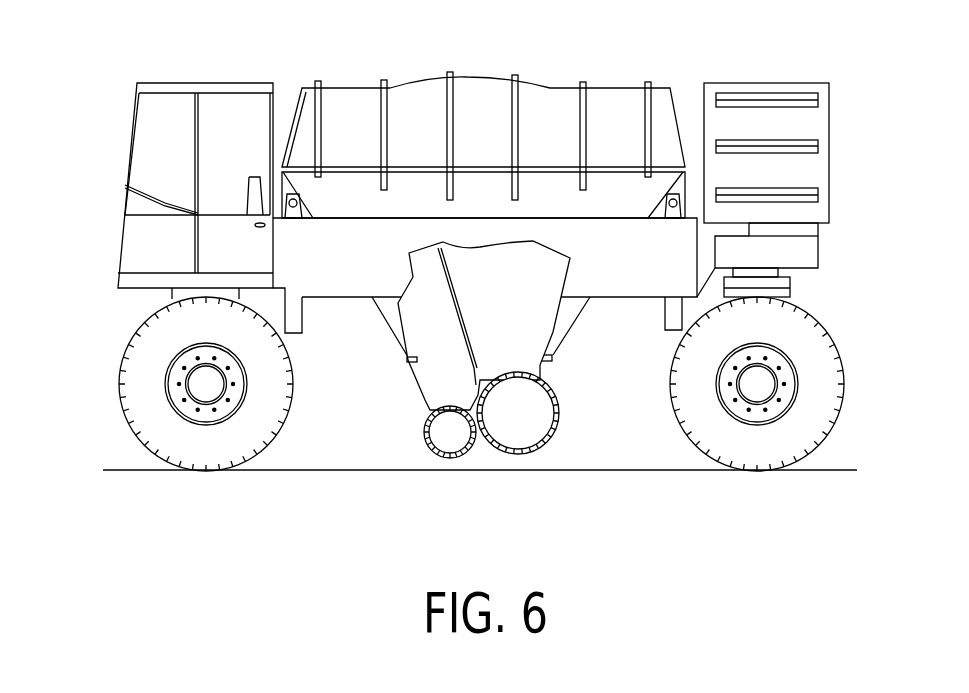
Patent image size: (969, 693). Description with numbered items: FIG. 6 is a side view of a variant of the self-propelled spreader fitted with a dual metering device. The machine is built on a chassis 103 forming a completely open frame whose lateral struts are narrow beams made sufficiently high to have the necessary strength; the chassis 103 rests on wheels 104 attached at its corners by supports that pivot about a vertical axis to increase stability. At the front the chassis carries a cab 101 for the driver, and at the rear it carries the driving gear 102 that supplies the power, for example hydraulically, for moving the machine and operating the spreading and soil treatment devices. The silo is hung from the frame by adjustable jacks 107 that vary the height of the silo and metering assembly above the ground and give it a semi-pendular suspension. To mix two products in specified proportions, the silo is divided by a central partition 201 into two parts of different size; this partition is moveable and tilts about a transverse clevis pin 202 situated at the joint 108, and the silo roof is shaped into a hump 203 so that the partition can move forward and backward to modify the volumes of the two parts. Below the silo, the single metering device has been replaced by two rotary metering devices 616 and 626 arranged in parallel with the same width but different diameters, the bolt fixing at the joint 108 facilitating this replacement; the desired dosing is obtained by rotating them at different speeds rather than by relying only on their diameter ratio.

The cab 101 is at (130, 192).
The driving gear 102 is at (768, 90).
The chassis 103 is at (615, 267).
The wheels 104 is at (813, 423).
The jacks 107 is at (665, 330).
The joint 108 is at (408, 357).
The central partition 201 is at (470, 343).
The transverse clevis pin 202 is at (472, 370).
The hump 203 is at (480, 78).
The rotary metering device 616 is at (522, 432).
The rotary metering device 626 is at (453, 437).